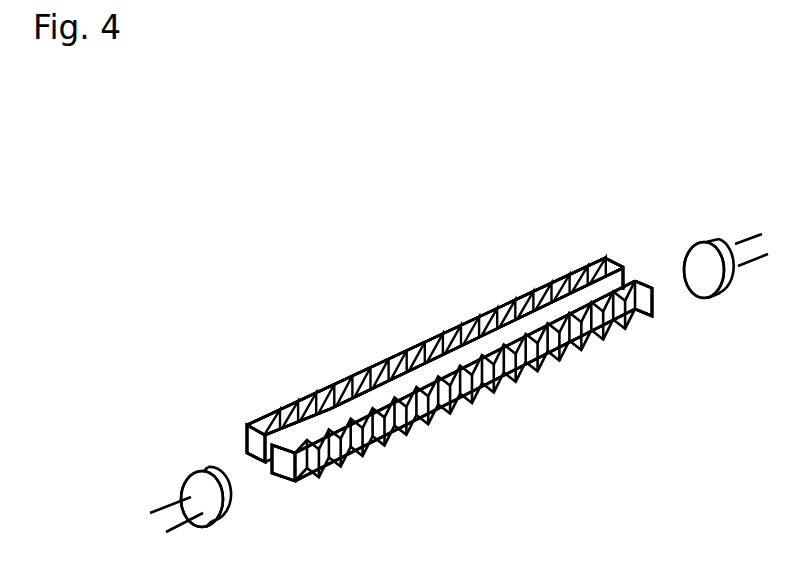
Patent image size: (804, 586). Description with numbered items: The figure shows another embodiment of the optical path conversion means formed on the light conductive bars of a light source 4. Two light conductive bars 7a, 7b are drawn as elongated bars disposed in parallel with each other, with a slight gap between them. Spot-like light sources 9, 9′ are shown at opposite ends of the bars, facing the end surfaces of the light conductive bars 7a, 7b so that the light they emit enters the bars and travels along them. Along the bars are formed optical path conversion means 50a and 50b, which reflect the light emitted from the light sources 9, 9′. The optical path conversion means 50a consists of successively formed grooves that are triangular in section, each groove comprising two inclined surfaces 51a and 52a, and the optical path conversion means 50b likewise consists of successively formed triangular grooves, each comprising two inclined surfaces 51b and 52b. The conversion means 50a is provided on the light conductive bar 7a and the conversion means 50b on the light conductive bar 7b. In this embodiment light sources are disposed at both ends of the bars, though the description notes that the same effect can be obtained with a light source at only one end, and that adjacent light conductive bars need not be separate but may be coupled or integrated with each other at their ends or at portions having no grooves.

The light source 4 is at (750, 148).
The light conductive bar 7a is at (647, 280).
The light conductive bar 7b is at (612, 261).
The spot-like light source 9 is at (719, 255).
The spot-like light source 9′ is at (216, 480).
The optical path conversion means 50a is at (615, 497).
The optical path conversion means 50b is at (498, 223).
The inclined surface 51a is at (517, 383).
The inclined surface 51b is at (535, 305).
The inclined surface 52a is at (491, 396).
The inclined surface 52b is at (487, 315).